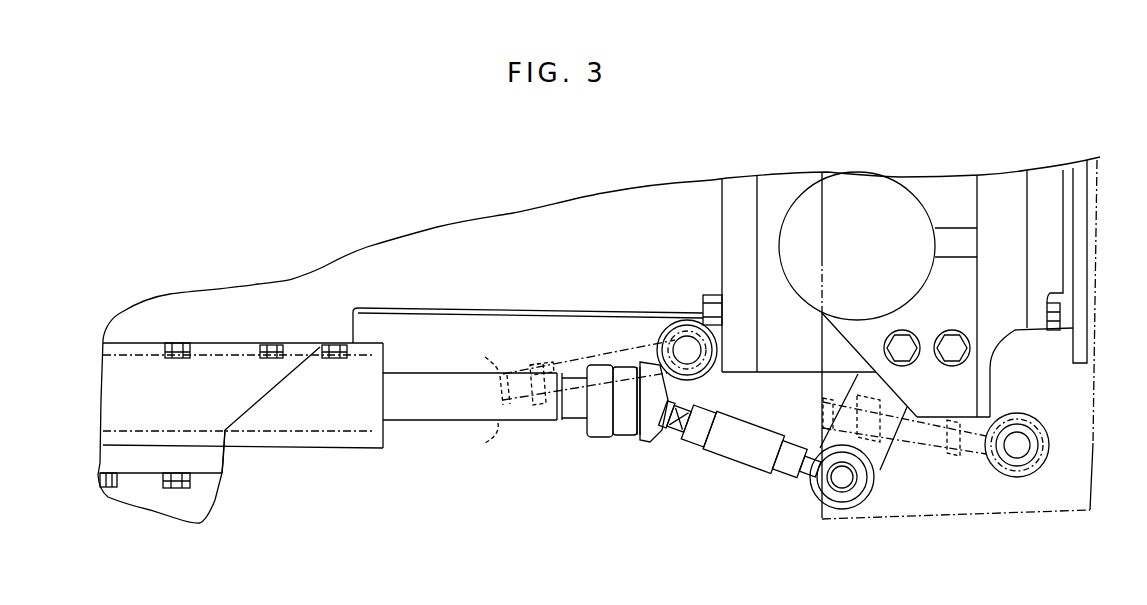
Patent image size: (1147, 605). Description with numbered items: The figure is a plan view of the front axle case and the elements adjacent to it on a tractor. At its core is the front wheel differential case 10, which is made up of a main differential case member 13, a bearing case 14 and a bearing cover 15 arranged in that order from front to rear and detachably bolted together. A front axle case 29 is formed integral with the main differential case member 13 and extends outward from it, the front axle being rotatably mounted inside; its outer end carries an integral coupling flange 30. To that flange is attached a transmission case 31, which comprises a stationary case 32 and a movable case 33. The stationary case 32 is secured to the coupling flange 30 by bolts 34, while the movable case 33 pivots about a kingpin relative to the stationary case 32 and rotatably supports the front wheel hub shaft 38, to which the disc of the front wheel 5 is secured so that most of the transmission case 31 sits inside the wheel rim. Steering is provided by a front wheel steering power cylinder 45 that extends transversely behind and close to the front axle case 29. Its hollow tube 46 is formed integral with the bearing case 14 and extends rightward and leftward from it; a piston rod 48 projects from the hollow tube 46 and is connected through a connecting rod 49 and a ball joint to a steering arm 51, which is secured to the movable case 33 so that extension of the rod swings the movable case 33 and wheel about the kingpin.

The front wheel 5 is at (1093, 447).
The front wheel differential case 10 is at (197, 285).
The main differential case member 13 is at (310, 310).
The bearing case 14 is at (237, 388).
The bearing cover 15 is at (205, 487).
The front axle case 29 is at (515, 242).
The coupling flange 30 is at (728, 223).
The transmission case 31 is at (787, 382).
The stationary case 32 is at (787, 183).
The movable case 33 is at (1012, 327).
The bolts 34 is at (703, 303).
The front wheel hub shaft 38 is at (1083, 237).
The front wheel steering power cylinder 45 is at (435, 423).
The hollow tube 46 is at (357, 423).
The piston rod 48 is at (492, 405).
The connecting rod 49 is at (727, 443).
The steering arm 51 is at (887, 425).